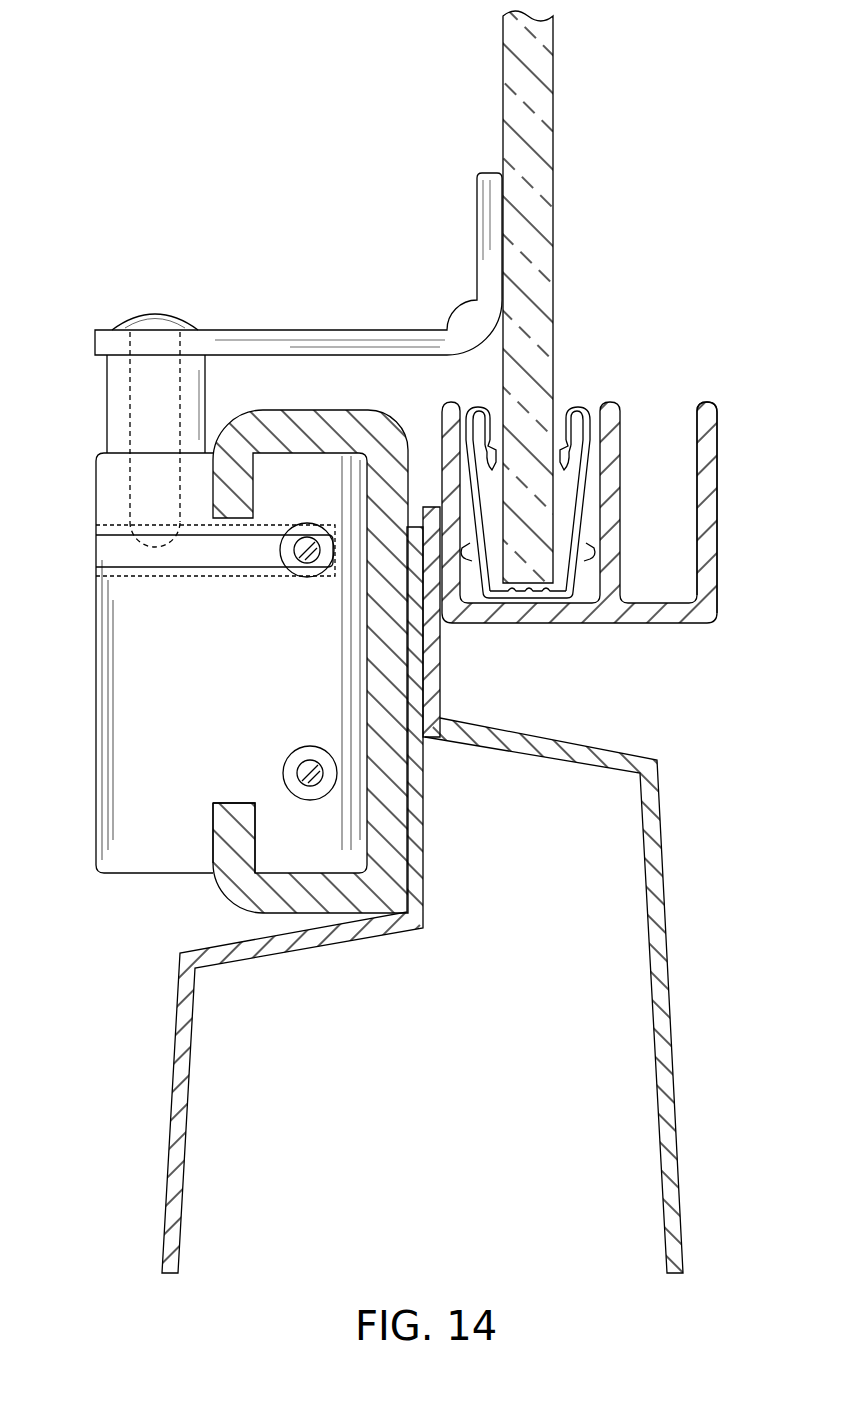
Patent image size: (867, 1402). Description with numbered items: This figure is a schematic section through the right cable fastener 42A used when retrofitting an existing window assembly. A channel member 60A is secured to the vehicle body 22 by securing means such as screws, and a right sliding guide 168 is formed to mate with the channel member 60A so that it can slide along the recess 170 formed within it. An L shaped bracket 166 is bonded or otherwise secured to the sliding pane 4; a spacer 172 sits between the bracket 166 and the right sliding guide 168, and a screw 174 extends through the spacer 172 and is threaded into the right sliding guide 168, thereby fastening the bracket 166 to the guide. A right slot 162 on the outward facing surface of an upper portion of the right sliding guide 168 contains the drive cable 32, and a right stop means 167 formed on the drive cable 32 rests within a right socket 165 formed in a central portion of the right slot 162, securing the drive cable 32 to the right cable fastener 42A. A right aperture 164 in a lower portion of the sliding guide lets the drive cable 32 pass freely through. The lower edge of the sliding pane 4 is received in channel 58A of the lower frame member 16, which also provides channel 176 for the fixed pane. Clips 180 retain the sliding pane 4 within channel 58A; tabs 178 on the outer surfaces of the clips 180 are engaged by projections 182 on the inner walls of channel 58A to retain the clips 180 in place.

The sliding pane 4 is at (545, 163).
The right cable fastener 42A is at (82, 314).
The L shaped bracket 166 is at (310, 330).
The screw 174 is at (162, 322).
The spacer 172 is at (112, 397).
The right sliding guide 168 is at (105, 597).
The channel member 60A is at (303, 410).
The recess 170 is at (267, 862).
The right slot 162 is at (216, 557).
The right socket 165 is at (145, 575).
The right stop means 167 is at (296, 530).
The right aperture 164 is at (300, 748).
The drive cable 32 is at (309, 560).
The vehicle body 22 is at (401, 922).
The lower frame member 16 is at (595, 613).
The channel 176 is at (697, 424).
The channel 58A is at (567, 481).
The clips 180 is at (484, 414).
The projections 182 is at (594, 532).
The tabs 178 is at (593, 578).